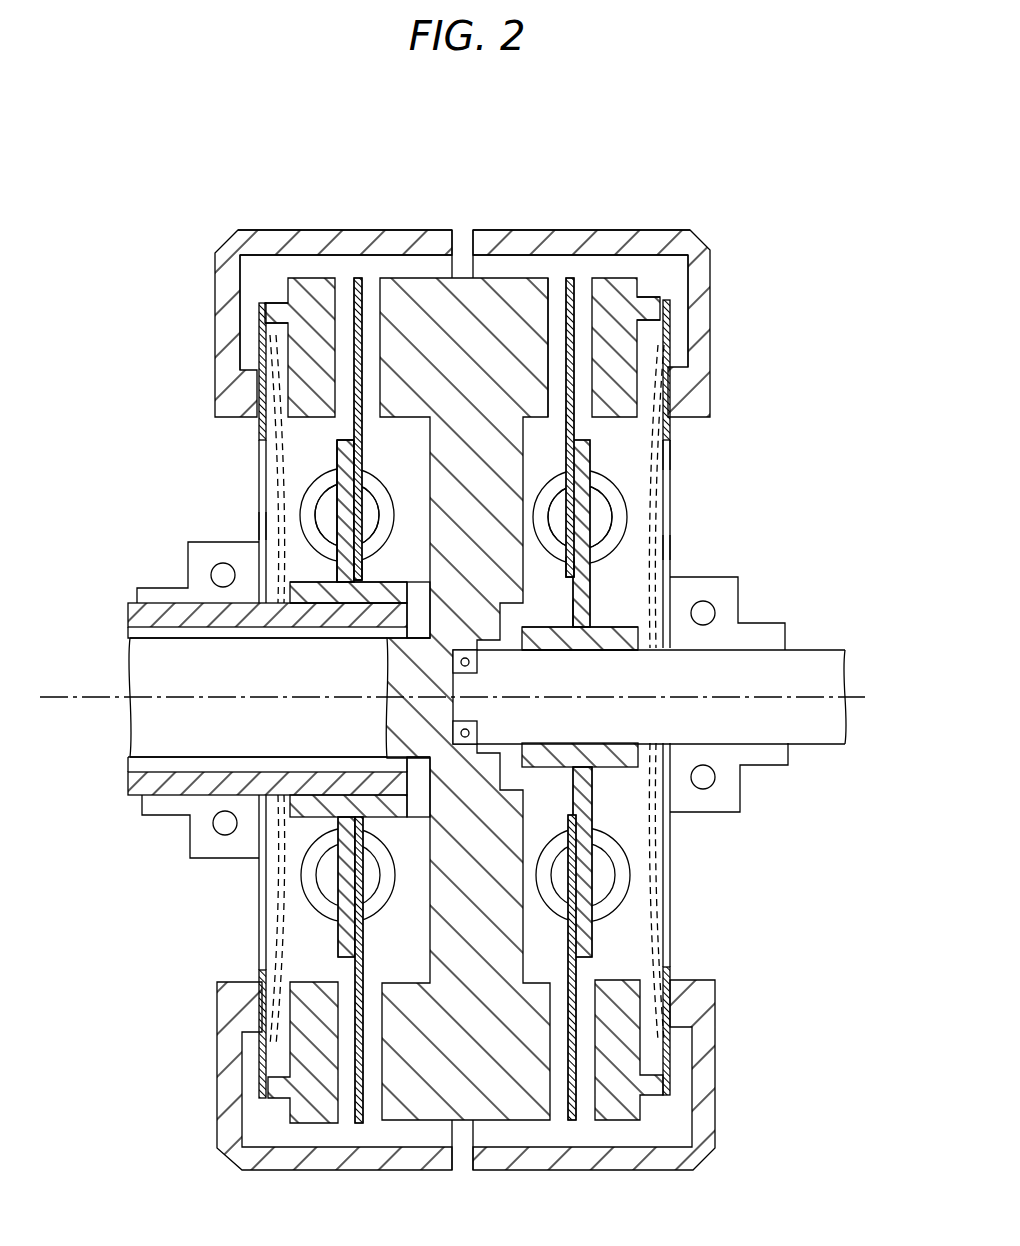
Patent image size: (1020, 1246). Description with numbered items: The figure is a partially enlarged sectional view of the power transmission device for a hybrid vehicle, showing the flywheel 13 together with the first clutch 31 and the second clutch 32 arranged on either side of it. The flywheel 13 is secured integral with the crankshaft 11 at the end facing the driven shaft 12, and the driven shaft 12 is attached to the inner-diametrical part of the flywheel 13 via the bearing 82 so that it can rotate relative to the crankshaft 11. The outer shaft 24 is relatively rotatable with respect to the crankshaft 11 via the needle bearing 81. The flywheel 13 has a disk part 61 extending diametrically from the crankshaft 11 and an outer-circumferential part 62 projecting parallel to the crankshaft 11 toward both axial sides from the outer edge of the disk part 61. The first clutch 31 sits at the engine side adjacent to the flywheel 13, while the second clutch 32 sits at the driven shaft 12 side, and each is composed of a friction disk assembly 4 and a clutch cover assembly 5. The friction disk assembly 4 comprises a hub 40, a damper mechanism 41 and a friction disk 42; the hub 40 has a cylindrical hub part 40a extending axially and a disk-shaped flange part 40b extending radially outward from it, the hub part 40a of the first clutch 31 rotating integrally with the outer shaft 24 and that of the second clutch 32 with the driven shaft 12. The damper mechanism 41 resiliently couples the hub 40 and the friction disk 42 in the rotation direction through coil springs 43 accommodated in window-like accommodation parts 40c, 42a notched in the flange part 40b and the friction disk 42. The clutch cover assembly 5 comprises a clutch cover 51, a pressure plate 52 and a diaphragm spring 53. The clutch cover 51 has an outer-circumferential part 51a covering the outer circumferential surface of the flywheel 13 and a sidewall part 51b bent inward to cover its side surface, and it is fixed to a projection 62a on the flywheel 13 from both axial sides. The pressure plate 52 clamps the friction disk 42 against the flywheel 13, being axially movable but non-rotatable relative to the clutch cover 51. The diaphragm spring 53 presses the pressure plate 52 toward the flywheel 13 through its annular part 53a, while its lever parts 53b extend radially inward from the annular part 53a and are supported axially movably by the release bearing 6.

The friction disk assembly 4 is at (381, 463).
The clutch cover assembly 5 is at (226, 238).
The release bearing 6 is at (188, 561).
The crankshaft 11 is at (150, 677).
The driven shaft 12 is at (818, 655).
The flywheel 13 is at (411, 316).
The outer shaft 24 is at (128, 608).
The first clutch 31 is at (308, 268).
The second clutch 32 is at (589, 268).
The hub 40 is at (410, 576).
The hub part 40a is at (407, 596).
The flange part 40b is at (337, 441).
The accommodation part 40c is at (352, 470).
The damper mechanism 41 is at (298, 489).
The friction disk 42 is at (358, 278).
The accommodation part 42a is at (364, 472).
The coil spring 43 is at (383, 537).
The clutch cover 51 is at (262, 231).
The outer-circumferential part 51a is at (333, 231).
The sidewall part 51b is at (240, 322).
The pressure plate 52 is at (262, 296).
The diaphragm spring 53 is at (259, 442).
The annular part 53a is at (259, 352).
The lever part 53b is at (259, 512).
The disk part 61 is at (670, 470).
The outer-circumferential part 62 is at (515, 367).
The projection 62a is at (463, 237).
The needle bearing 81 is at (128, 632).
The bearing 82 is at (453, 661).